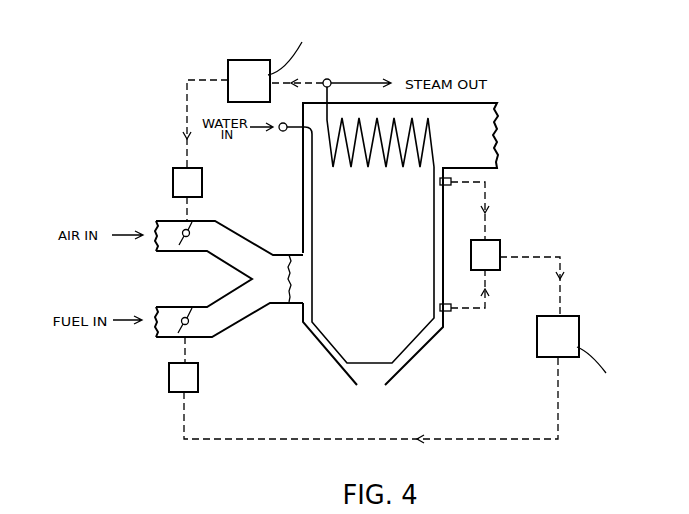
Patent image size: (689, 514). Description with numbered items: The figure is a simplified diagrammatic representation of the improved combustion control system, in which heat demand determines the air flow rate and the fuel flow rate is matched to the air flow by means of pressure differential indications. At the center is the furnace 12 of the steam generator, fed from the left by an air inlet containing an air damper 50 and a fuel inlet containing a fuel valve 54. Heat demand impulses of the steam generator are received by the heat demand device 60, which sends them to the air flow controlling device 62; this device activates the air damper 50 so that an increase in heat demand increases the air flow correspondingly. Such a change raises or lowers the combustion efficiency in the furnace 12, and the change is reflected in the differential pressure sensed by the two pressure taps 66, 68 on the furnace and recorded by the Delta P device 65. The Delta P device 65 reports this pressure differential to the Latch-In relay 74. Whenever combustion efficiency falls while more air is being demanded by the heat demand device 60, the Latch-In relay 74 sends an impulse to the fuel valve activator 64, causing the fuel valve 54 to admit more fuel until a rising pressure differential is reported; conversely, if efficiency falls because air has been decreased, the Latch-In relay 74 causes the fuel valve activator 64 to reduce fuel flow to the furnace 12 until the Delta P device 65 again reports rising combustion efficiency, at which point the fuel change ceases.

The furnace 12 is at (361, 254).
The air damper 50 is at (190, 231).
The fuel valve 54 is at (189, 325).
The heat demand device 60 is at (261, 58).
The air flow controlling device 62 is at (180, 184).
The fuel valve activator 64 is at (175, 378).
The Delta P device 65 is at (500, 247).
The pressure tap 66 is at (440, 182).
The pressure tap 68 is at (440, 308).
The Latch-In relay 74 is at (607, 358).